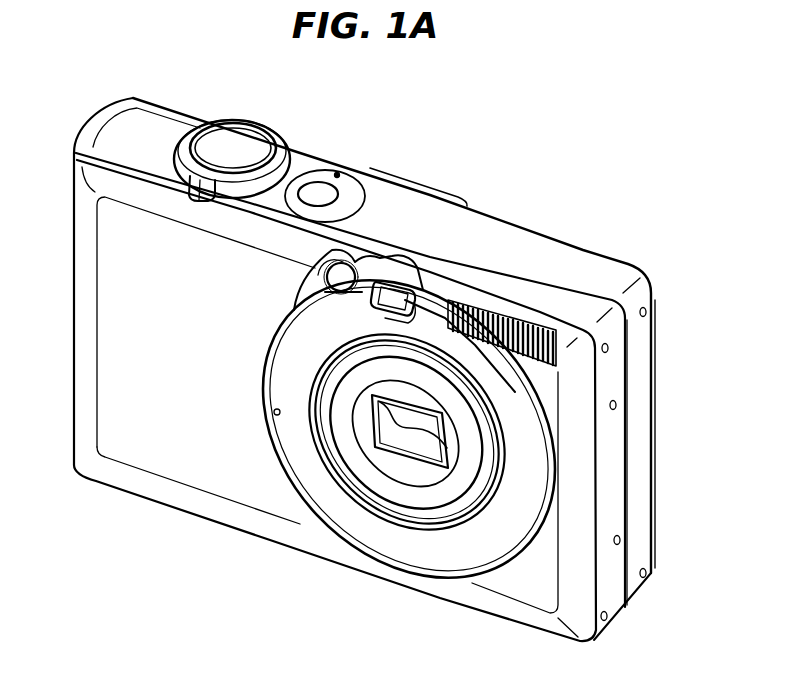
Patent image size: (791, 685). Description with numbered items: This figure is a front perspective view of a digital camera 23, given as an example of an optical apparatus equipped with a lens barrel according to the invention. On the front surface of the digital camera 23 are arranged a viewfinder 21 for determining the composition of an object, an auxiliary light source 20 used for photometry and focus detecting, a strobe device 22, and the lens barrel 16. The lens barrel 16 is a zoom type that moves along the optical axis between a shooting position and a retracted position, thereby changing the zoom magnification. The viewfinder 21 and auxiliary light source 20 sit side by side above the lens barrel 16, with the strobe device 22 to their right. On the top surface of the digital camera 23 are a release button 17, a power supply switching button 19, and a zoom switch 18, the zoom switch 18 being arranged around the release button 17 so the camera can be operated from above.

The lens barrel 16 is at (410, 490).
The release button 17 is at (283, 140).
The zoom switch 18 is at (240, 140).
The power supply switching button 19 is at (318, 187).
The auxiliary light source 20 is at (340, 277).
The viewfinder 21 is at (395, 293).
The strobe device 22 is at (505, 322).
The digital camera 23 is at (212, 473).